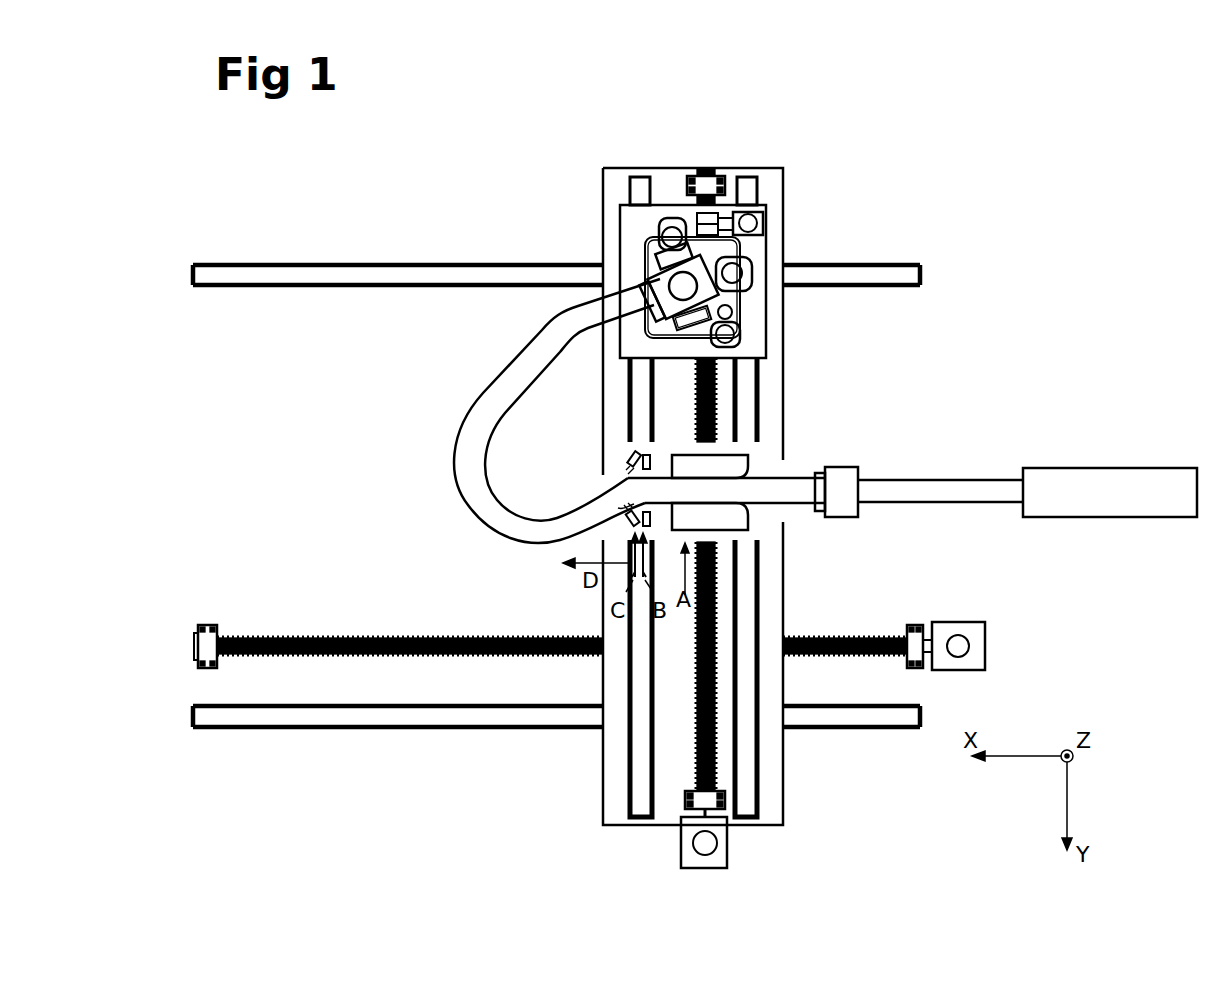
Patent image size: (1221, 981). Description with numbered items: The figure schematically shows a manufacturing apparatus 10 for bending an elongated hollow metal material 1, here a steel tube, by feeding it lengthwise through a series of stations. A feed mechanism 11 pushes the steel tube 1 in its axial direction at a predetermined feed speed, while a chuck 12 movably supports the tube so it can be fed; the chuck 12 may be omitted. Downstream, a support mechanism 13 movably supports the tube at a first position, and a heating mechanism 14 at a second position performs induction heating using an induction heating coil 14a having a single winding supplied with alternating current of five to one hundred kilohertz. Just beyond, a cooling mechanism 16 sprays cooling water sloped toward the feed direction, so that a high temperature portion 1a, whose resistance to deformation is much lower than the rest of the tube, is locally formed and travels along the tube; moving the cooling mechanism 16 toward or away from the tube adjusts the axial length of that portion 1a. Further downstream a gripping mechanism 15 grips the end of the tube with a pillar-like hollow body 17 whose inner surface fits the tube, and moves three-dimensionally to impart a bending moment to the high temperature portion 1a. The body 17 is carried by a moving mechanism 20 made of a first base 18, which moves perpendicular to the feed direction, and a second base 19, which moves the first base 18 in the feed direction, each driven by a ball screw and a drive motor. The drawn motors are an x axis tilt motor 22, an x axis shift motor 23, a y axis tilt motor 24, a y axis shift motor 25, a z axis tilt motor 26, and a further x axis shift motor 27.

The metal material (steel tube) 1 is at (945, 480).
The high temperature portion 1a is at (640, 494).
The manufacturing apparatus 10 is at (961, 235).
The feed mechanism 11 is at (1117, 467).
The chuck 12 is at (837, 465).
The support mechanism 13 is at (758, 455).
The heating mechanism 14 is at (650, 455).
The induction heating coil 14a is at (650, 516).
The gripping mechanism 15 is at (652, 165).
The cooling mechanism 16 is at (628, 464).
The body 17 is at (690, 308).
The first base 18 is at (668, 205).
The second base 19 is at (624, 168).
The moving mechanism 20 is at (598, 194).
The x axis tilt motor 22 is at (758, 263).
The x axis shift motor 23 is at (960, 622).
The y axis tilt motor 24 is at (650, 226).
The y axis shift motor 25 is at (730, 845).
The z axis tilt motor 26 is at (740, 338).
The x axis shift motor 27 is at (768, 218).